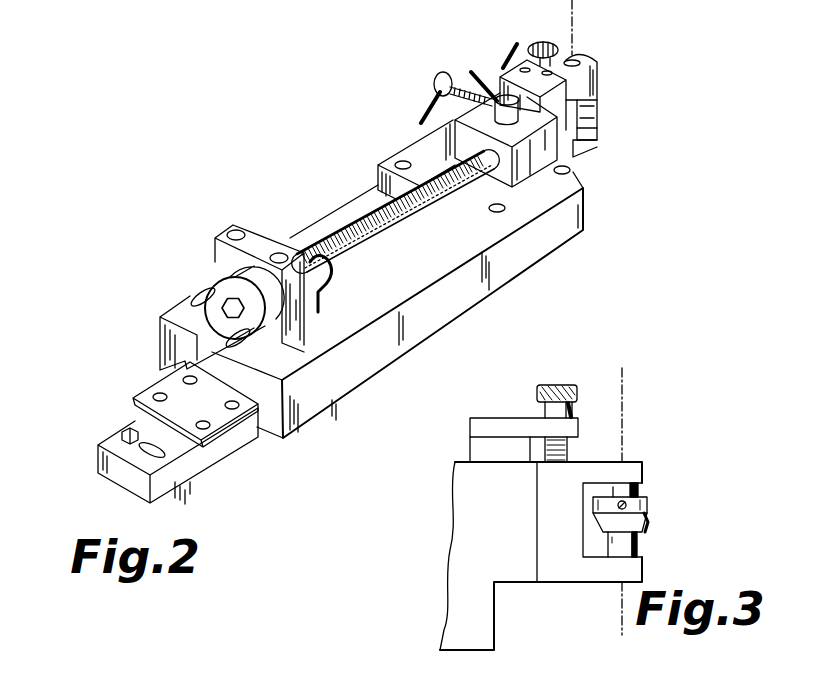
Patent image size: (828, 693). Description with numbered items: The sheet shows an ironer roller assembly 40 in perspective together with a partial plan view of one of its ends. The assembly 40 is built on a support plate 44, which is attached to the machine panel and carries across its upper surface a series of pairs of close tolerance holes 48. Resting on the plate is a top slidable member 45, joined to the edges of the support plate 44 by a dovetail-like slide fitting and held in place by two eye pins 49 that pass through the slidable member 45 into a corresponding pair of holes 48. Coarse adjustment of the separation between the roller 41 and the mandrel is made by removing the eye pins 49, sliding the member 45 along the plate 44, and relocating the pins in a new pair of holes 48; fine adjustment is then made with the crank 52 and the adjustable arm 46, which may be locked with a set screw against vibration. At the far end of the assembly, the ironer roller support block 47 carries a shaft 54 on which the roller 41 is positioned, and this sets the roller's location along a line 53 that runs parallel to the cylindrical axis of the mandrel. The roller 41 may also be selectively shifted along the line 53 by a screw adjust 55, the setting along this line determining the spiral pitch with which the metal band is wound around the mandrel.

In FIG. 2, the ironer roller assembly 40 is at (367, 127).
In FIG. 3, the ironer roller assembly 40 is at (442, 556).
In FIG. 2, the roller 41 is at (598, 106).
In FIG. 3, the roller 41 is at (654, 507).
In FIG. 2, the support plate 44 is at (160, 392).
In FIG. 2, the top slidable member 45 is at (353, 197).
In FIG. 2, the adjustable arm 46 is at (338, 215).
In FIG. 2, the ironer roller support block 47 is at (575, 143).
In FIG. 2, the close tolerance holes 48 is at (130, 410).
In FIG. 2, the eye pins 49 is at (280, 238).
In FIG. 2, the crank 52 is at (192, 292).
In FIG. 2, the line 53 is at (610, 0).
In FIG. 3, the line 53 is at (623, 401).
In FIG. 3, the shaft 54 is at (640, 543).
In FIG. 2, the screw adjust 55 is at (543, 54).
In FIG. 3, the screw adjust 55 is at (577, 388).